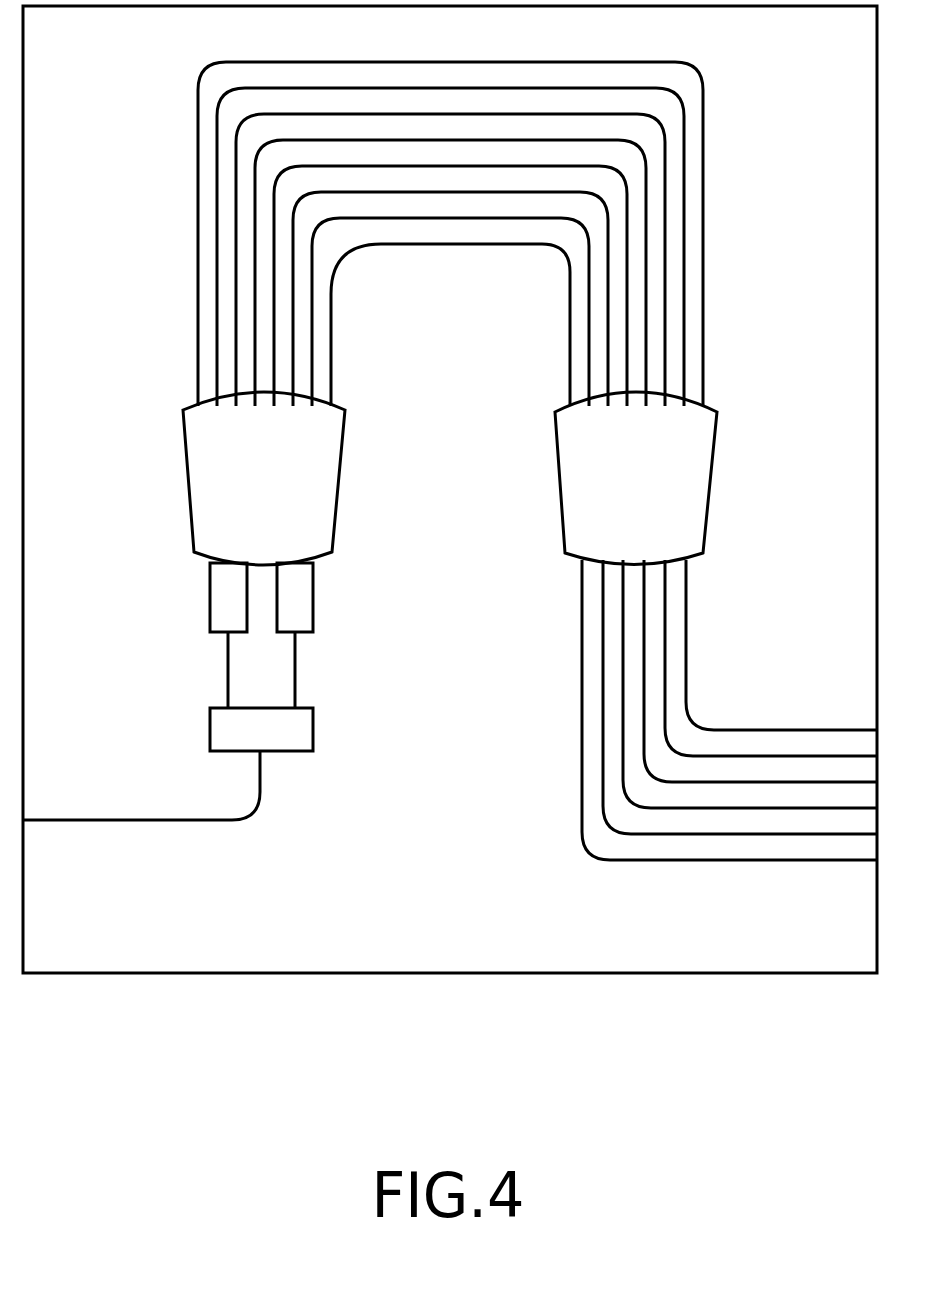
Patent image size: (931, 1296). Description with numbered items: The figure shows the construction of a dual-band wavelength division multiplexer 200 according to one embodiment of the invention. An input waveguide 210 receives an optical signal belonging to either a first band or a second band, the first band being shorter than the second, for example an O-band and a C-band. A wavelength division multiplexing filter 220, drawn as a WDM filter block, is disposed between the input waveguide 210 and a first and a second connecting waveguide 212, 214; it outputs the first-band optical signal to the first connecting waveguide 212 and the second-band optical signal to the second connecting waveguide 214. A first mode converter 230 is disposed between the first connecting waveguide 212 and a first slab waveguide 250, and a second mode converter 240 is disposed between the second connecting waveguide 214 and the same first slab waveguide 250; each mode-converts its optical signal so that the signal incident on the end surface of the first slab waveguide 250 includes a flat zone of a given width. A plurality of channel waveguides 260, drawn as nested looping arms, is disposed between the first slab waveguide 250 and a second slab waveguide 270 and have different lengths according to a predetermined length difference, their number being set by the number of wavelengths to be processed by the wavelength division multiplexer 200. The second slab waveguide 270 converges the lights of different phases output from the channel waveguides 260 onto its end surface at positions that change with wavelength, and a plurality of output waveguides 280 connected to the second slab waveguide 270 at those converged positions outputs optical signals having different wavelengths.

The wavelength division multiplexer 200 is at (423, 1081).
The input waveguide 210 is at (155, 822).
The first connecting waveguide 212 is at (228, 675).
The second connecting waveguide 214 is at (297, 667).
The wavelength division multiplexing filter 220 is at (313, 725).
The first mode converter 230 is at (210, 563).
The second mode converter 240 is at (313, 563).
The first slab waveguide 250 is at (187, 483).
The channel waveguides 260 is at (450, 272).
The second slab waveguide 270 is at (712, 484).
The output waveguides 280 is at (710, 636).